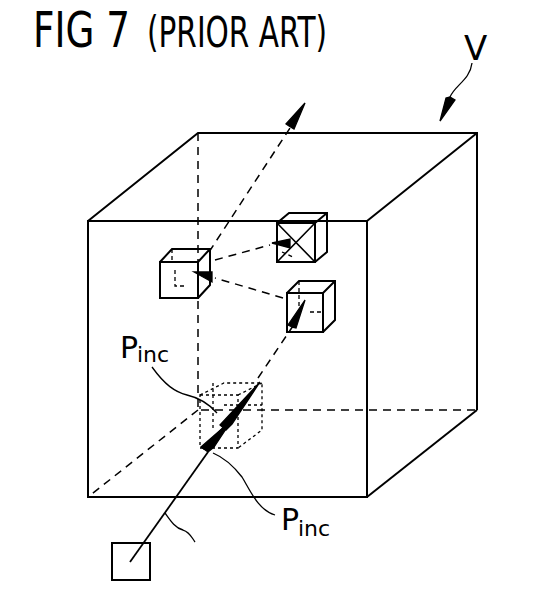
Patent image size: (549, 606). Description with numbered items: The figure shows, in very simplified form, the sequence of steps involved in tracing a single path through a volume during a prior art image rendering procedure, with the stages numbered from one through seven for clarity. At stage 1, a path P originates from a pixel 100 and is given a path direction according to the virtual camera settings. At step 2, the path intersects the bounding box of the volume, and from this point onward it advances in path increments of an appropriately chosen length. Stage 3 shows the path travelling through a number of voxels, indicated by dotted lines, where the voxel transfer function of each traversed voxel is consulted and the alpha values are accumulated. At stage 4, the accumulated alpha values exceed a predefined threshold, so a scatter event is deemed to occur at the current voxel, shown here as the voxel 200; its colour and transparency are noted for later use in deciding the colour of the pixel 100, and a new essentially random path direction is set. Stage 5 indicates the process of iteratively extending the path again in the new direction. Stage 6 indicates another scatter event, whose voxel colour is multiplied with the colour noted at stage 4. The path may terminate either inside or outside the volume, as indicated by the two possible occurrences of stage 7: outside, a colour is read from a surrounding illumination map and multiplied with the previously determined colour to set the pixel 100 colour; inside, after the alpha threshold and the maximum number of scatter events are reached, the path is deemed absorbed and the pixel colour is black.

The pixel 100 is at (112, 575).
The voxel of the volume 200 is at (327, 308).
The stage 1 is at (164, 473).
The step 2 is at (192, 429).
The stage 3 is at (245, 422).
The stage 4 is at (306, 339).
The stage 5 is at (238, 301).
The stage 6 is at (164, 264).
The stage 7 is at (286, 177).